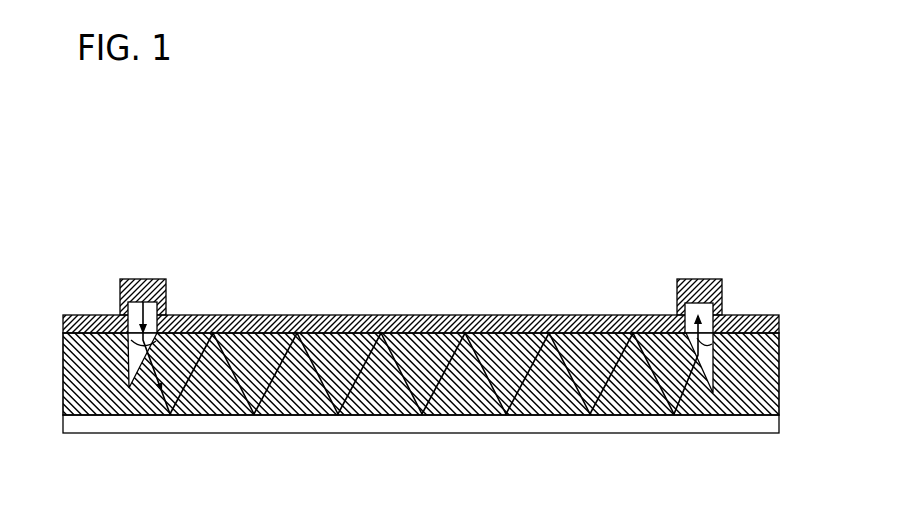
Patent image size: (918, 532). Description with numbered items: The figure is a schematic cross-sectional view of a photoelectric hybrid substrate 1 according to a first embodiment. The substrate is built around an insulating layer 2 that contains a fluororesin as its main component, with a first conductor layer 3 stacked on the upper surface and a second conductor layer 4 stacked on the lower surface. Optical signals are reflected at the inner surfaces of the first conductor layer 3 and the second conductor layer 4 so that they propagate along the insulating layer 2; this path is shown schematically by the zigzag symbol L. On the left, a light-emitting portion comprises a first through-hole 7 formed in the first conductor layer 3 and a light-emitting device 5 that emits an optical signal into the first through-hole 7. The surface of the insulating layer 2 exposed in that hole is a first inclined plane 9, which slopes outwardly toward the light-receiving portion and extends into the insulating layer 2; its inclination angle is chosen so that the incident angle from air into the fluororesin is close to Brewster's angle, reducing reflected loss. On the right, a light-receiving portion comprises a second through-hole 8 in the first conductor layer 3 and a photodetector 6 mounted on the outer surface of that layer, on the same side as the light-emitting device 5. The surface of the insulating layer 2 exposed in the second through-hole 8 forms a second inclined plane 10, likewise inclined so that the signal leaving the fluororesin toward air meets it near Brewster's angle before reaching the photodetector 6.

The photoelectric hybrid substrate 1 is at (246, 177).
The insulating layer 2 is at (63, 376).
The first conductor layer 3 is at (249, 316).
The second conductor layer 4 is at (123, 433).
The light-emitting device 5 is at (156, 278).
The photodetector 6 is at (685, 279).
The first through-hole 7 is at (130, 285).
The second through-hole 8 is at (711, 279).
The first inclined plane 9 is at (128, 373).
The second inclined plane 10 is at (709, 376).
The path of an optical signal L is at (305, 415).